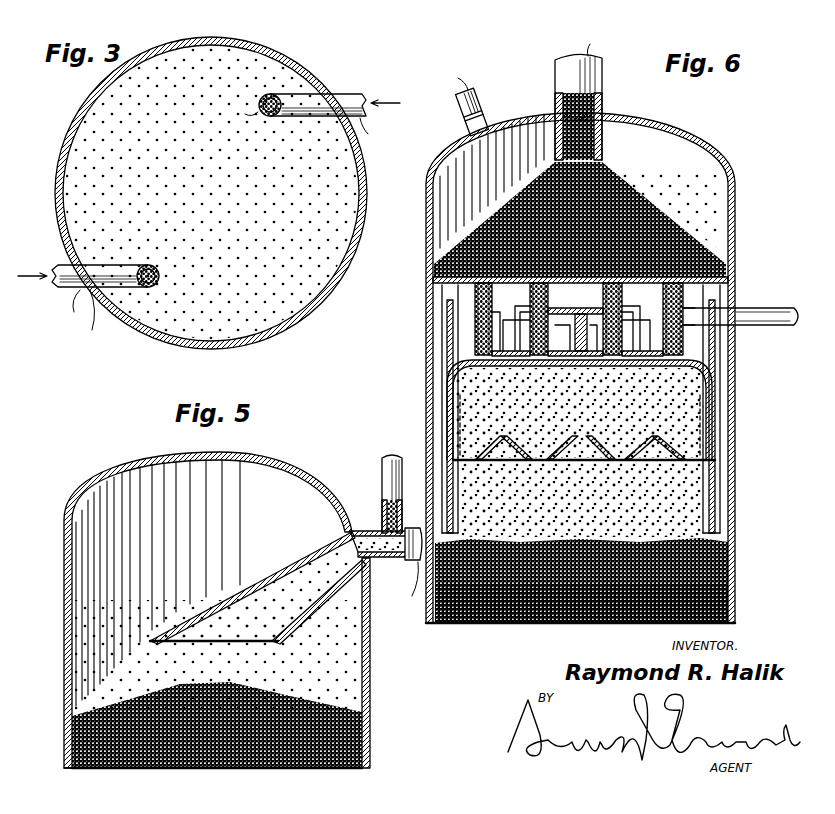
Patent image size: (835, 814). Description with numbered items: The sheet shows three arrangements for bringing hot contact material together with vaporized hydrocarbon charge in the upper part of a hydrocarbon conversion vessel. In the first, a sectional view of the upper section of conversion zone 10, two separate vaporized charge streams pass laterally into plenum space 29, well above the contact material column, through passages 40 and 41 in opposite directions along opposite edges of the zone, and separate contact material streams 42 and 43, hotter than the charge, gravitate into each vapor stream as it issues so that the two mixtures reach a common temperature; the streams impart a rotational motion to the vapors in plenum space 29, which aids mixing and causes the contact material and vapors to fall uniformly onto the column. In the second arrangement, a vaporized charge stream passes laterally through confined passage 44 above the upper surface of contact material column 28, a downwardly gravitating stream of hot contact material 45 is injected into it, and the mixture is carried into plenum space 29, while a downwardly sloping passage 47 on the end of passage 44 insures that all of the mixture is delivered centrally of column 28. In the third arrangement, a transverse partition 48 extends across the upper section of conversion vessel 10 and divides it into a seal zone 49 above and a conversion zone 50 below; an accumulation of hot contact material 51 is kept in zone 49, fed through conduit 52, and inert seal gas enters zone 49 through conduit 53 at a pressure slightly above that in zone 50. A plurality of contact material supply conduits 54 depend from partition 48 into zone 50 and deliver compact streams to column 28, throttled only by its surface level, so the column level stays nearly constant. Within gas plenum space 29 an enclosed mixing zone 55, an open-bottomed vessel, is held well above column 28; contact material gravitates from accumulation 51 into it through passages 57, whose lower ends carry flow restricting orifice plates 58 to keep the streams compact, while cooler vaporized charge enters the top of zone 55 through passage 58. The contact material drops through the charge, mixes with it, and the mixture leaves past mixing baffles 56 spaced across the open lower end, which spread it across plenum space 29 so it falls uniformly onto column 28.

In FIG. 3, the conversion zone 10 is at (75, 112).
In FIG. 5, the conversion zone 10 is at (66, 584).
In FIG. 6, the conversion zone 10 is at (715, 150).
In FIG. 5, the contact material column 28 is at (72, 750).
In FIG. 6, the contact material column 28 is at (722, 612).
In FIG. 3, the plenum space 29 is at (240, 62).
In FIG. 5, the plenum space 29 is at (80, 632).
In FIG. 6, the plenum space 29 is at (690, 490).
In FIG. 3, the passage 40 is at (83, 310).
In FIG. 3, the passage 41 is at (352, 92).
In FIG. 3, the contact material stream 42 is at (162, 276).
In FIG. 3, the contact material stream 43 is at (267, 117).
In FIG. 5, the confined passage 44 is at (410, 562).
In FIG. 5, the contact material stream 45 is at (382, 466).
In FIG. 5, the downwardly sloping passage 47 is at (266, 580).
In FIG. 6, the transverse partition 48 is at (722, 258).
In FIG. 6, the seal zone 49 is at (710, 186).
In FIG. 6, the accumulation of contact material 51 is at (708, 238).
In FIG. 6, the conversion zone 50 is at (718, 558).
In FIG. 6, the conduit 52 is at (600, 80).
In FIG. 6, the conduit 53 is at (484, 102).
In FIG. 6, the contact material supply conduits 54 is at (440, 324).
In FIG. 6, the mixing zone 55 is at (714, 416).
In FIG. 6, the mixing baffles 56 is at (600, 462).
In FIG. 6, the passages 57 is at (603, 300).
In FIG. 6, the flow restricting orifice plates 58 is at (544, 362).